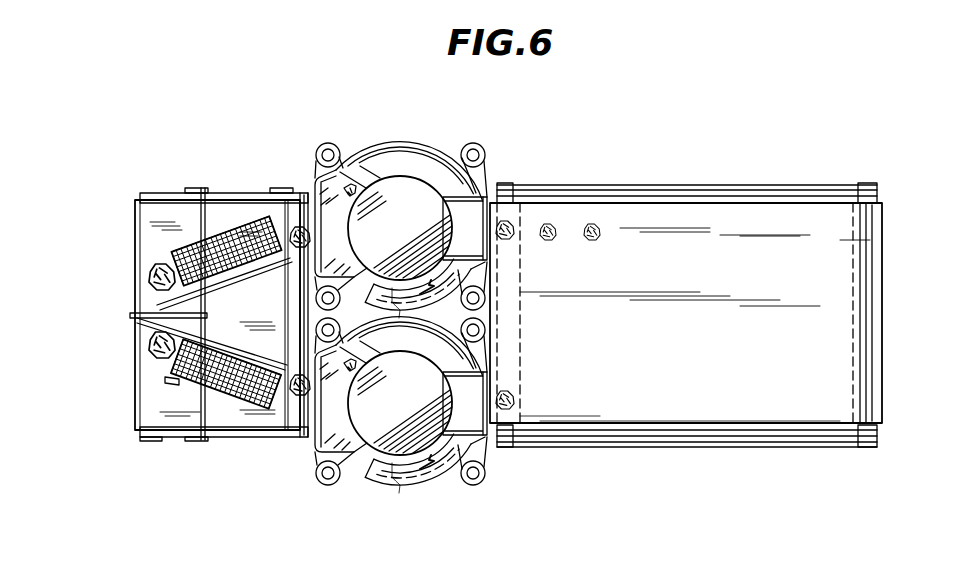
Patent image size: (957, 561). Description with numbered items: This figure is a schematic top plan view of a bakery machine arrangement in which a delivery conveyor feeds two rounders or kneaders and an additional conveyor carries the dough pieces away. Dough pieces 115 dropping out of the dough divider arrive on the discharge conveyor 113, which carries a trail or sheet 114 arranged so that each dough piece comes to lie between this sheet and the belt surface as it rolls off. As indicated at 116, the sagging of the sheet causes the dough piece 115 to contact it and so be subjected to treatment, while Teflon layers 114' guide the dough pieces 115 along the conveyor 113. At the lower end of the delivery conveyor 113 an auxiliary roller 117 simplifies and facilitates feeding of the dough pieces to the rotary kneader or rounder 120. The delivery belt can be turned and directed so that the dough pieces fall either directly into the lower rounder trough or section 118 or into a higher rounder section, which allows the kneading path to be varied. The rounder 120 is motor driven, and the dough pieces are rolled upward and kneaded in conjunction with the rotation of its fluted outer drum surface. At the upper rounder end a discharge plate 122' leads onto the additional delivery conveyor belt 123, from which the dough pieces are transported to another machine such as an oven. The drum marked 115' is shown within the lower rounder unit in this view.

The discharge conveyor 113 is at (142, 216).
The sheet 114 is at (211, 314).
The Teflon layers 114' is at (120, 290).
The dough piece 115 is at (125, 354).
The lower roller 115' is at (400, 403).
The sagging of the sheet 116 is at (250, 222).
The auxiliary roller 117 is at (296, 398).
The lower rounder trough 118 is at (318, 188).
The rotary kneader 120 is at (396, 484).
The discharge plate 122' is at (494, 322).
The additional delivery conveyor belt 123 is at (835, 313).